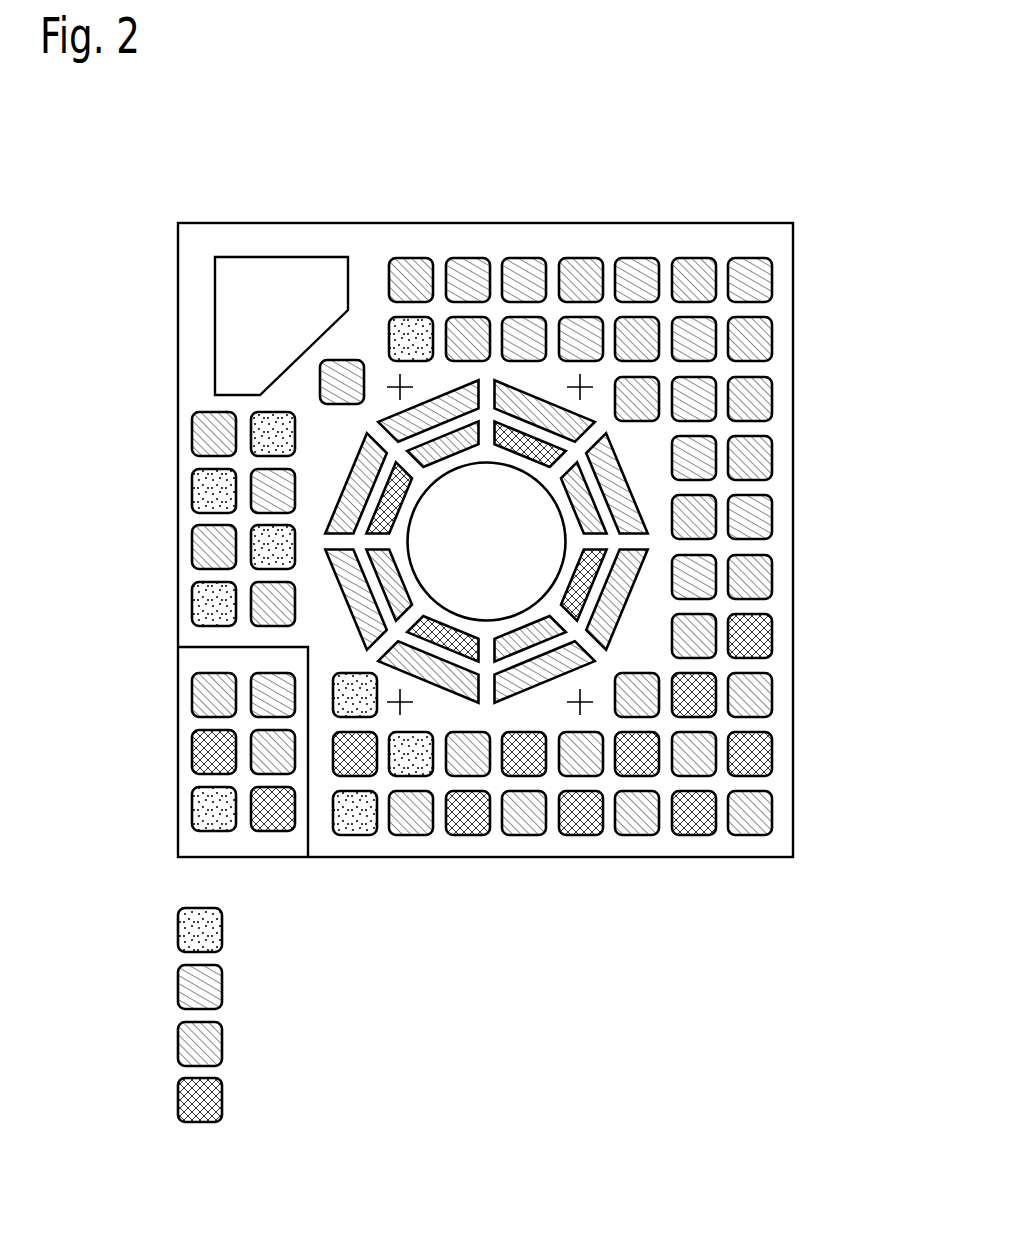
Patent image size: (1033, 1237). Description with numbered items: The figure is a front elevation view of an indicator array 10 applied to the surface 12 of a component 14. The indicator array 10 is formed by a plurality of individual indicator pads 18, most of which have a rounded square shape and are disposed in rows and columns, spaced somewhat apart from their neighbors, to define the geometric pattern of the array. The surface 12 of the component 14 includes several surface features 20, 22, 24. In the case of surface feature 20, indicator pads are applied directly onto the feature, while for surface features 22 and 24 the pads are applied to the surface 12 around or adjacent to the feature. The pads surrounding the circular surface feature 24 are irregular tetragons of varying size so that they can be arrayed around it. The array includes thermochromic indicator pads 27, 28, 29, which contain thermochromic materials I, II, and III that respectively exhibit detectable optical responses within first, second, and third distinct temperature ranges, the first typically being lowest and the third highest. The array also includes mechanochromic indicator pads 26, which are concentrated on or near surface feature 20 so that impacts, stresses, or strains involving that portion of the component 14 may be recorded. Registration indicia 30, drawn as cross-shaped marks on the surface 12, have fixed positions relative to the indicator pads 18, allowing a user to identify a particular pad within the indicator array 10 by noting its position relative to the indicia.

The indicator array 10 is at (833, 250).
The surface 12 is at (770, 247).
The component 14 is at (425, 158).
The indicator pads 18 is at (190, 488).
The surface feature 20 is at (528, 392).
The surface feature 22 is at (278, 324).
The circular surface feature 24 is at (501, 556).
The mechanochromic indicator pads 26 is at (349, 930).
The thermochromic indicator pad 27 is at (347, 987).
The thermochromic indicator pad 28 is at (350, 1044).
The thermochromic indicator pad 29 is at (354, 1100).
The registration indicia 30 is at (402, 385).